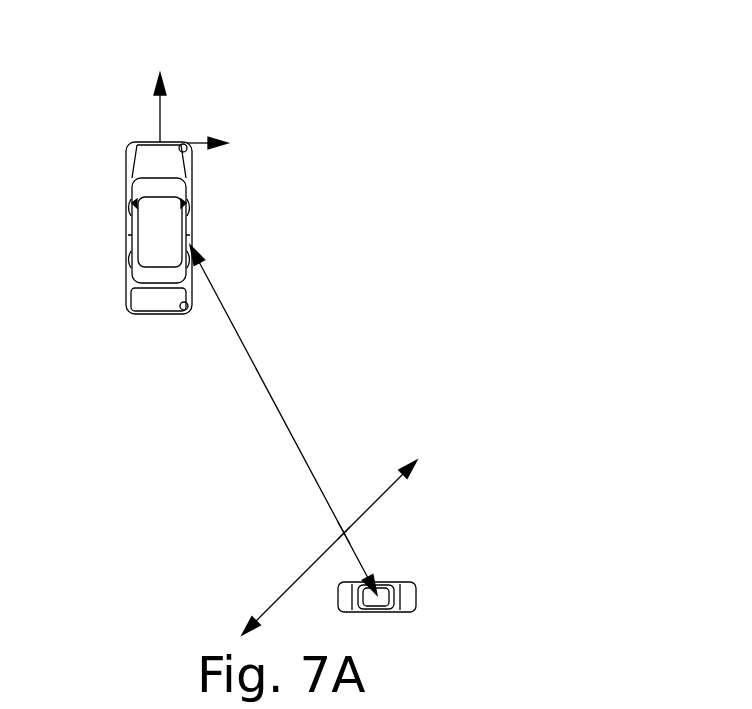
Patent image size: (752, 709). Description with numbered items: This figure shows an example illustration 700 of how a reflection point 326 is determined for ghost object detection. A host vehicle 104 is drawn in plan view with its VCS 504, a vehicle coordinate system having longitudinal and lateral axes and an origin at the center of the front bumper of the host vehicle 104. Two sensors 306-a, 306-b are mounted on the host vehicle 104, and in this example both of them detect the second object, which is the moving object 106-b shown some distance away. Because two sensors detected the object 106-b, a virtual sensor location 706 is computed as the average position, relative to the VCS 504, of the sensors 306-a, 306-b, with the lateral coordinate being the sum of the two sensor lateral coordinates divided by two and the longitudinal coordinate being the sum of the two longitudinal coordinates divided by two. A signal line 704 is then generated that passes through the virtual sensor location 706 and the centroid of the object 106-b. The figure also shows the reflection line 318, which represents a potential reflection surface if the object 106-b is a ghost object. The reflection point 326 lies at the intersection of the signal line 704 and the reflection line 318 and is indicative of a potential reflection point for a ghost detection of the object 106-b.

The example illustration 700 is at (626, 47).
The host vehicle 104 is at (126, 165).
The VCS 504 is at (157, 112).
The sensor 306-a is at (190, 143).
The sensor 306-b is at (183, 309).
The signal line 704 is at (240, 337).
The virtual sensor location 706 is at (194, 236).
The reflection line 318 is at (398, 474).
The reflection point 326 is at (346, 533).
The object 106-b is at (416, 584).